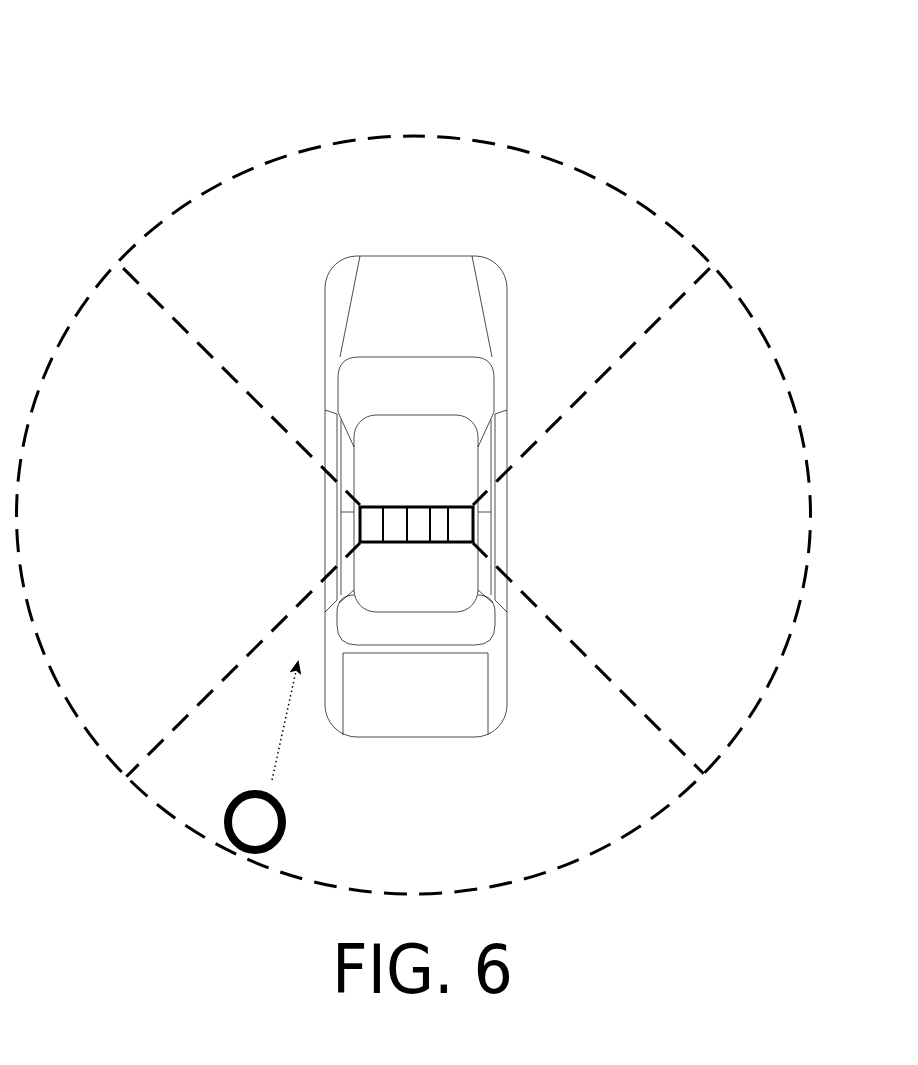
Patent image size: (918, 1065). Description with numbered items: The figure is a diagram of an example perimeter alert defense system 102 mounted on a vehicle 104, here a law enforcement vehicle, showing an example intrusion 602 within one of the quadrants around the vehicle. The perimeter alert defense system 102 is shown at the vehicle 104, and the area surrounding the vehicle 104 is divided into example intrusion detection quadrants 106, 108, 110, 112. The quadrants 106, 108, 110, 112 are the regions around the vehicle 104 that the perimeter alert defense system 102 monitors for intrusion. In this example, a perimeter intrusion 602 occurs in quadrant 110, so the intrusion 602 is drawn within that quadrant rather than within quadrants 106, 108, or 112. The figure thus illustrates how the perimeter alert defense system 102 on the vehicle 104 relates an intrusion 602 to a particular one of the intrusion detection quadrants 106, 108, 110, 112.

The perimeter alert defense system 102 is at (398, 496).
The vehicle 104 is at (512, 360).
The intrusion detection quadrant 106 is at (433, 118).
The intrusion detection quadrant 108 is at (755, 292).
The intrusion detection quadrant 110 is at (563, 892).
The intrusion detection quadrant 112 is at (82, 768).
The intrusion 602 is at (300, 813).